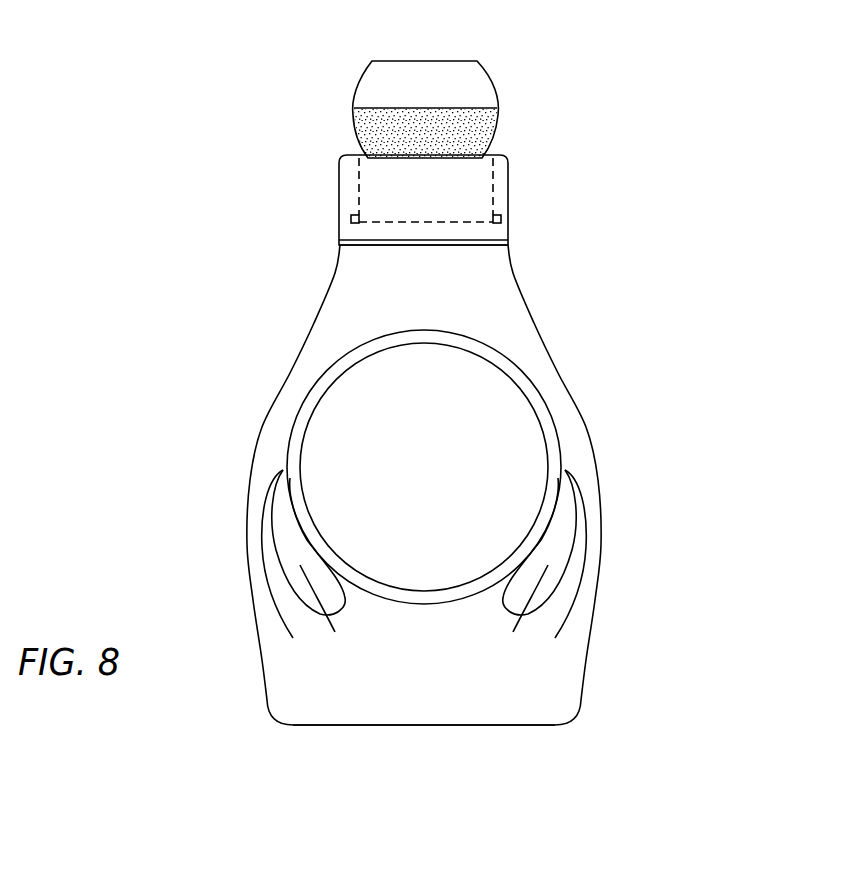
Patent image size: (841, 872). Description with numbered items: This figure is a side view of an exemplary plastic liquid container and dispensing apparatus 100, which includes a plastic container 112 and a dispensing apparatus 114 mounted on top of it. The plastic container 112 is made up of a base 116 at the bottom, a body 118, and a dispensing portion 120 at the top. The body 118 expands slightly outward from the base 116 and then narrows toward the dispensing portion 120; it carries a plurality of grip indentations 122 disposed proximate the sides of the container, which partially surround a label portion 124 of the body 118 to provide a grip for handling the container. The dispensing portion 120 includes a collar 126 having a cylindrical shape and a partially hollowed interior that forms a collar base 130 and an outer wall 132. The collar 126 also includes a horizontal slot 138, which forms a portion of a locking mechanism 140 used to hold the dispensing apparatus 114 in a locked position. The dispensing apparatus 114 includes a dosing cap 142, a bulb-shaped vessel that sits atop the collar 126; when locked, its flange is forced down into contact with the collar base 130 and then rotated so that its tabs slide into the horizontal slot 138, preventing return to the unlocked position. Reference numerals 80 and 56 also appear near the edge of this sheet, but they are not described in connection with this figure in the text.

The system component 80 is at (42, 9).
The housing element 56 is at (162, 0).
The plastic liquid container and dispensing apparatus 100 is at (306, 134).
The plastic container 112 is at (280, 380).
The dispensing apparatus 114 is at (519, 134).
The base 116 is at (296, 727).
The body 118 is at (247, 512).
The dispensing portion 120 is at (522, 197).
The grip indentations 122 is at (263, 547).
The label portion 124 is at (440, 418).
The collar 126 is at (340, 192).
The collar base 130 is at (438, 223).
The outer wall 132 is at (506, 153).
The horizontal slot 138 is at (351, 219).
The locking mechanism 140 is at (324, 237).
The dosing cap 142 is at (441, 61).